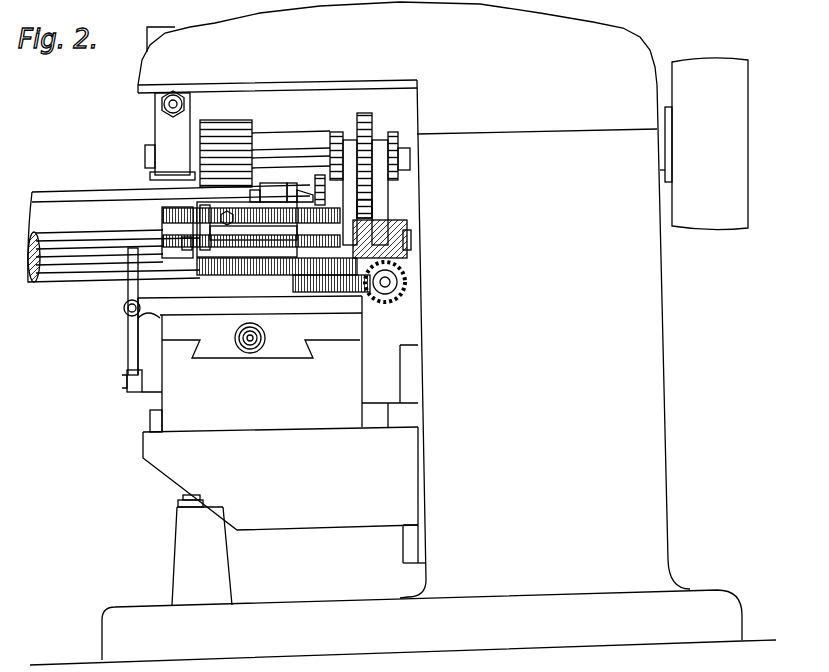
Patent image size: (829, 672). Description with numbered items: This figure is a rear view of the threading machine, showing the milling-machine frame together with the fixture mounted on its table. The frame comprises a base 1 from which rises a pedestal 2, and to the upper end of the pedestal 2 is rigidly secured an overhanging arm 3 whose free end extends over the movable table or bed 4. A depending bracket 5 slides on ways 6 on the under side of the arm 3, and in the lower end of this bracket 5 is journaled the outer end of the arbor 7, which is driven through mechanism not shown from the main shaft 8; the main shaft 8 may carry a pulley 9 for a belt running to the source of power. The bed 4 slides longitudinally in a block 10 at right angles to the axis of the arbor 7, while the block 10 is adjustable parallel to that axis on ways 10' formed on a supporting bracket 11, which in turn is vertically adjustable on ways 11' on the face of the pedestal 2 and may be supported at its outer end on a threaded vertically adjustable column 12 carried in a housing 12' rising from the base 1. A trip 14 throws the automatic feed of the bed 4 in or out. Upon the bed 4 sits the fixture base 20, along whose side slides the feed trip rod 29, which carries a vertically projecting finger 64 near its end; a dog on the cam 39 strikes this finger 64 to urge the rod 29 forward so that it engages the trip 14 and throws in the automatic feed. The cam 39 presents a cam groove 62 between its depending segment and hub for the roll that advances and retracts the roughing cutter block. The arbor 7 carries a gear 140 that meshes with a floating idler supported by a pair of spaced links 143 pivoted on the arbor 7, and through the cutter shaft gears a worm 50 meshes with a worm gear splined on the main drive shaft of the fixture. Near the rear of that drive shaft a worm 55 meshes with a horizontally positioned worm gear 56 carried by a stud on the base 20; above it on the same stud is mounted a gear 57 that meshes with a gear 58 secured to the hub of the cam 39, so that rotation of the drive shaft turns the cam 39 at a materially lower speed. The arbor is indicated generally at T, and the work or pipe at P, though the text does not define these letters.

The base 1 is at (727, 592).
The pedestal 2 is at (545, 339).
The overhanging arm 3 is at (397, 47).
The movable table or bed 4 is at (178, 328).
The depending bracket 5 is at (175, 133).
The ways 6 is at (272, 82).
The arbor 7 is at (294, 146).
The main shaft 8 is at (537, 155).
The pulley 9 is at (704, 144).
The block 10 is at (262, 364).
The ways 10' is at (131, 421).
The supporting bracket 11 is at (280, 495).
The ways 11' is at (390, 459).
The threaded vertically adjustable column 12 is at (164, 495).
The housing 12' is at (202, 556).
The trip 14 is at (132, 362).
The base 20 is at (250, 308).
The feed trip rod 29 is at (124, 308).
The cam 39 is at (167, 220).
The worm 50 is at (402, 230).
The worm 55 is at (388, 303).
The worm gear 56 is at (357, 285).
The gear 57 is at (313, 270).
The gear 58 is at (242, 270).
The cam groove 62 is at (377, 213).
The finger 64 is at (155, 238).
The gear 140 is at (371, 128).
The links 143 is at (338, 131).
The toothed drum T is at (226, 143).
The pipe / work piece P is at (97, 200).